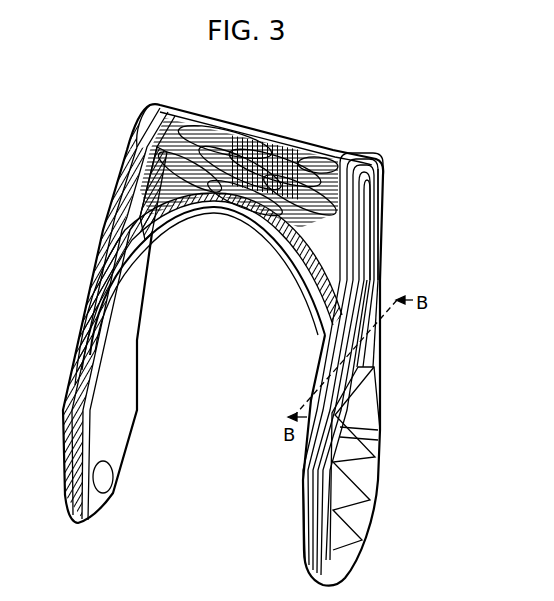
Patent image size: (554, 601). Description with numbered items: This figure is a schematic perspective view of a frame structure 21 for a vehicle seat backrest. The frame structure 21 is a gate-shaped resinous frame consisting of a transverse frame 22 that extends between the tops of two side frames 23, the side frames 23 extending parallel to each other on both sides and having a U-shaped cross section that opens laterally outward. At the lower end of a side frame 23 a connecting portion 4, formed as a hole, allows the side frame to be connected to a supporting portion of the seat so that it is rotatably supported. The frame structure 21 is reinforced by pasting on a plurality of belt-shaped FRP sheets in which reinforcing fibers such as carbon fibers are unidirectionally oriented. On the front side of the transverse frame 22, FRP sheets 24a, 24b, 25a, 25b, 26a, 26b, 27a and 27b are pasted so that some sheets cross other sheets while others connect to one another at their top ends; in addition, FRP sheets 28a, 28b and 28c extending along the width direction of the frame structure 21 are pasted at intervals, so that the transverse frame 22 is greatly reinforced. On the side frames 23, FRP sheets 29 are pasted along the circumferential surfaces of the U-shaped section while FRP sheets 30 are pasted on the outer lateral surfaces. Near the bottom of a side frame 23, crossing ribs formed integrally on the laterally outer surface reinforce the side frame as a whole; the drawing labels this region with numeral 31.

The frame structure 21 is at (396, 143).
The transverse frame 22 is at (337, 150).
The side frames 23 is at (380, 262).
The FRP sheet 24a is at (200, 208).
The FRP sheet 24b is at (253, 224).
The FRP sheet 25a is at (160, 237).
The FRP sheet 25b is at (310, 287).
The FRP sheet 26a is at (150, 193).
The FRP sheet 26b is at (370, 243).
The FRP sheet 27a is at (167, 142).
The FRP sheet 27b is at (380, 177).
The FRP sheet 28a is at (227, 123).
The FRP sheet 28b is at (277, 143).
The FRP sheet 28c is at (297, 150).
The FRP sheets 29 is at (350, 203).
The FRP sheets 30 is at (382, 286).
The reinforcing rib 31 is at (375, 438).
The connecting portions 4 is at (113, 480).